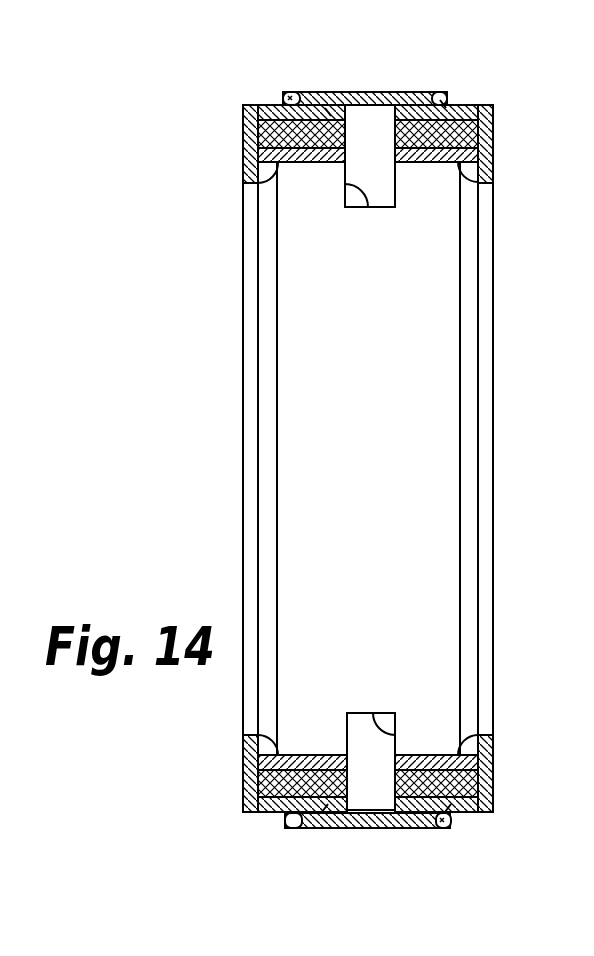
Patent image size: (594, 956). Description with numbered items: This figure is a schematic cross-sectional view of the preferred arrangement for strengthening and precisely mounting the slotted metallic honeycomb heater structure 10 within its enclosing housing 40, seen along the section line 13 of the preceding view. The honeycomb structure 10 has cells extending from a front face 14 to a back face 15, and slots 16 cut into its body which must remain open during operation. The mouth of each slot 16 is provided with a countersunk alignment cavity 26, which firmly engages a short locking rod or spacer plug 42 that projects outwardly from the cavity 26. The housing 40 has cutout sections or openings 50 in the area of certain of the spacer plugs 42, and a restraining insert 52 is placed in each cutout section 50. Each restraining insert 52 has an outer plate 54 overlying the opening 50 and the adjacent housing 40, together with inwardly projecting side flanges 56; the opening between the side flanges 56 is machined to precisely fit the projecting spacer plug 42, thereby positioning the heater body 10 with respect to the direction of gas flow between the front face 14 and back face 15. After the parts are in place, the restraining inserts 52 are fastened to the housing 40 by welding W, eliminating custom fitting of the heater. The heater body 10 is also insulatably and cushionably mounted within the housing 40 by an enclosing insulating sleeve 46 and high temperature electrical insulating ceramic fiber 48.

The honeycomb structure 10 is at (463, 278).
The section line 13- 13 is at (322, 42).
The front face 14 is at (277, 507).
The back face 15 is at (462, 508).
The slots 16 is at (390, 354).
The countersunk alignment cavity 26 is at (370, 190).
The housing 40 is at (493, 133).
The spacer plug 42 is at (360, 118).
The insulating sleeve 46 is at (480, 167).
The ceramic fiber 48 is at (262, 135).
The cutout sections 50 is at (337, 125).
The restraining insert 52 is at (416, 92).
The outer plate 54 is at (320, 92).
The side flanges 56 is at (333, 112).
The welding W is at (283, 100).